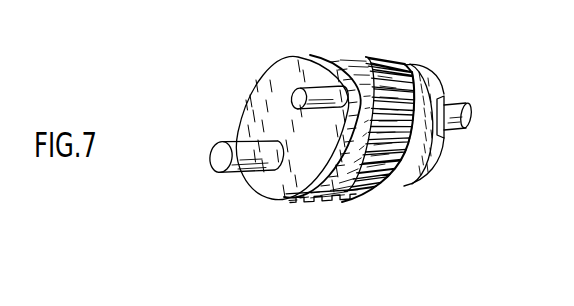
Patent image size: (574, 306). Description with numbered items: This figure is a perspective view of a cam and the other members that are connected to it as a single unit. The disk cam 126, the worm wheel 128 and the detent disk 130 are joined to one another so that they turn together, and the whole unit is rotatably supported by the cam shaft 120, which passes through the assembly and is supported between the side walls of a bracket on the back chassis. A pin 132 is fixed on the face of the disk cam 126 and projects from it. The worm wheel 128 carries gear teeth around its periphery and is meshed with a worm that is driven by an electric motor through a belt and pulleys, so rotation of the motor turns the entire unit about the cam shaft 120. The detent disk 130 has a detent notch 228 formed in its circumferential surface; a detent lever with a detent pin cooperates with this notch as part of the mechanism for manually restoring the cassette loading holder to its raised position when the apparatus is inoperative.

The cam shaft 120 is at (224, 177).
The disk cam 126 is at (257, 90).
The worm wheel 128 is at (342, 194).
The detent disk 130 is at (410, 64).
The pin 132 is at (312, 109).
The detent notch 228 is at (446, 139).